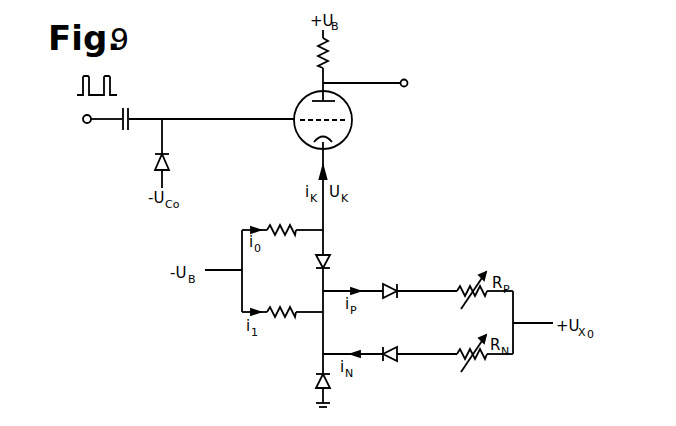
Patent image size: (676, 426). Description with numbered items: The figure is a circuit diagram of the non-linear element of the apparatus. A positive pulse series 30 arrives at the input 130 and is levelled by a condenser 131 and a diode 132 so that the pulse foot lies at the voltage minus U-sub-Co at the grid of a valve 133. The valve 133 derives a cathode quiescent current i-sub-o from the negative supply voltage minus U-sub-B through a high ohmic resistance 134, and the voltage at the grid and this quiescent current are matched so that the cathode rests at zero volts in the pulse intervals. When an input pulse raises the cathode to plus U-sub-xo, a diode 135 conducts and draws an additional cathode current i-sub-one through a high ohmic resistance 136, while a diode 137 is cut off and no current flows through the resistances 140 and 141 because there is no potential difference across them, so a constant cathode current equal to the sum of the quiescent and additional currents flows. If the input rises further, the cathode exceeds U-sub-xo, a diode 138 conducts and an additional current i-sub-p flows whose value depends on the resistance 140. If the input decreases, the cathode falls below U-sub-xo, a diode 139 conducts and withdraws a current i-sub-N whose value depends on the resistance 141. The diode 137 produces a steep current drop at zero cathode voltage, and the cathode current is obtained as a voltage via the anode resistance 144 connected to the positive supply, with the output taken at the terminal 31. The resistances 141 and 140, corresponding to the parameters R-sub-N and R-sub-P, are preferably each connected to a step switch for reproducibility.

The positive pulse series 30 is at (112, 79).
The output terminal 31 is at (407, 80).
The input 130 is at (62, 117).
The condenser 131 is at (137, 102).
The diode 132 is at (143, 168).
The valve 133 is at (344, 120).
The high ohmic resistance 134 is at (282, 211).
The diode 135 is at (342, 264).
The high ohmic resistance 136 is at (282, 331).
The diode 137 is at (305, 381).
The diode 138 is at (396, 276).
The diode 139 is at (393, 371).
The resistance 140 is at (471, 275).
The resistance 141 is at (473, 368).
The anode resistance 144 is at (348, 55).